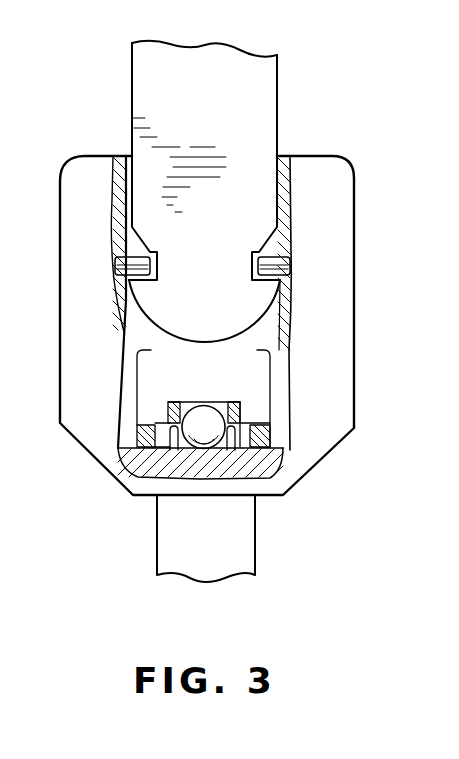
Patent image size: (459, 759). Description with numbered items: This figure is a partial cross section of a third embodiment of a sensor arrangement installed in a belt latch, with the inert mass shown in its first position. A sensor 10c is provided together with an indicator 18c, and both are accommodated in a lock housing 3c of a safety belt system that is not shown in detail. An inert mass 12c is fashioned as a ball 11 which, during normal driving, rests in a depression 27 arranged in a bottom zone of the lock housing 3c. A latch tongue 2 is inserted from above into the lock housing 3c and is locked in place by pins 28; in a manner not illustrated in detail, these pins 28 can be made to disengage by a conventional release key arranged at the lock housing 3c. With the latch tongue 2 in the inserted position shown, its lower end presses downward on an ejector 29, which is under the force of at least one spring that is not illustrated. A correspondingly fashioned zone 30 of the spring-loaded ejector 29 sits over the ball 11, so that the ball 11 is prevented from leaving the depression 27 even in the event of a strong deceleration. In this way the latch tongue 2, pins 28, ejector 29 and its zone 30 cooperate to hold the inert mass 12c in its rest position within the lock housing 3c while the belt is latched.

The latch tongue 2 is at (252, 123).
The lock housing 3c is at (320, 177).
The sensor 10c is at (317, 401).
The pins 28 is at (115, 262).
The indicator 18c is at (154, 407).
The inert mass 12c is at (222, 399).
The depression 27 is at (228, 435).
The zone of the ejector 30 is at (242, 435).
The ejector 29 is at (255, 395).
The ball 11 is at (190, 450).